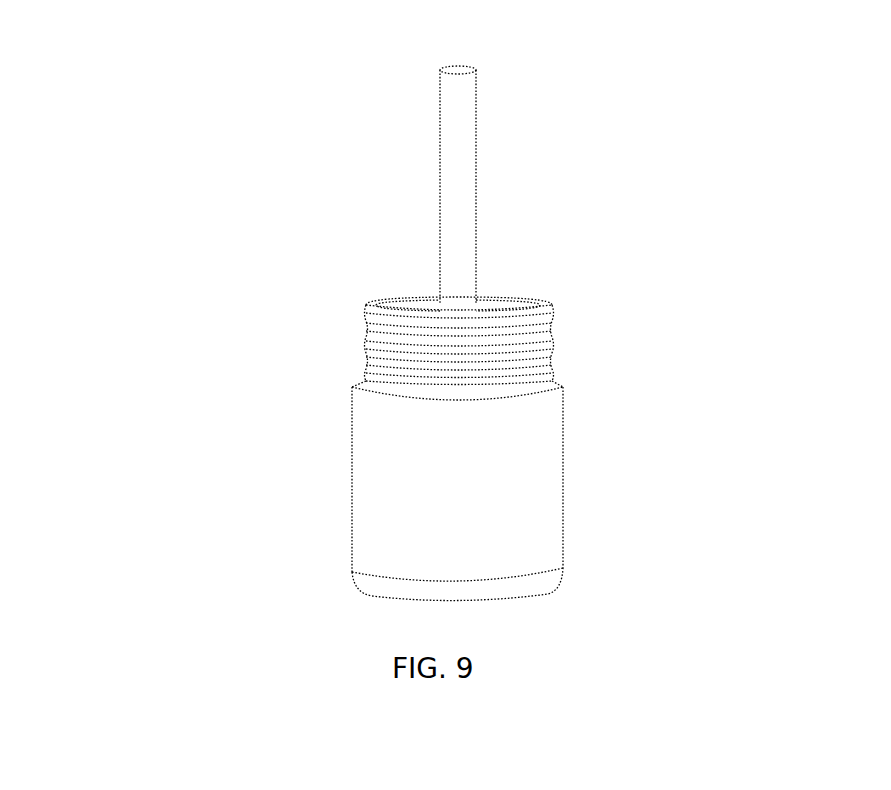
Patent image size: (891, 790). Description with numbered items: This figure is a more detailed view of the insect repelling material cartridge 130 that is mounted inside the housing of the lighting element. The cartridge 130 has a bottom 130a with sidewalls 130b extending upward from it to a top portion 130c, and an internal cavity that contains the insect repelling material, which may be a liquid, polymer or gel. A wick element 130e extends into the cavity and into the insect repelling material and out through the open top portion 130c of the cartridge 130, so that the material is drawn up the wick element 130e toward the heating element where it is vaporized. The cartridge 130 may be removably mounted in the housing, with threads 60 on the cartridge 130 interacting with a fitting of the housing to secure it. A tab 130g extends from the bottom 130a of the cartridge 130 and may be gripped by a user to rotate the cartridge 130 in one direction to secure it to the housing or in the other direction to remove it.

The insect repelling material cartridge 130 is at (600, 423).
The bottom 130a is at (563, 569).
The sidewalls 130b is at (563, 515).
The top portion 130c is at (475, 316).
The wick element 130e is at (462, 242).
The tab 130g is at (383, 584).
The threads 60 is at (385, 360).